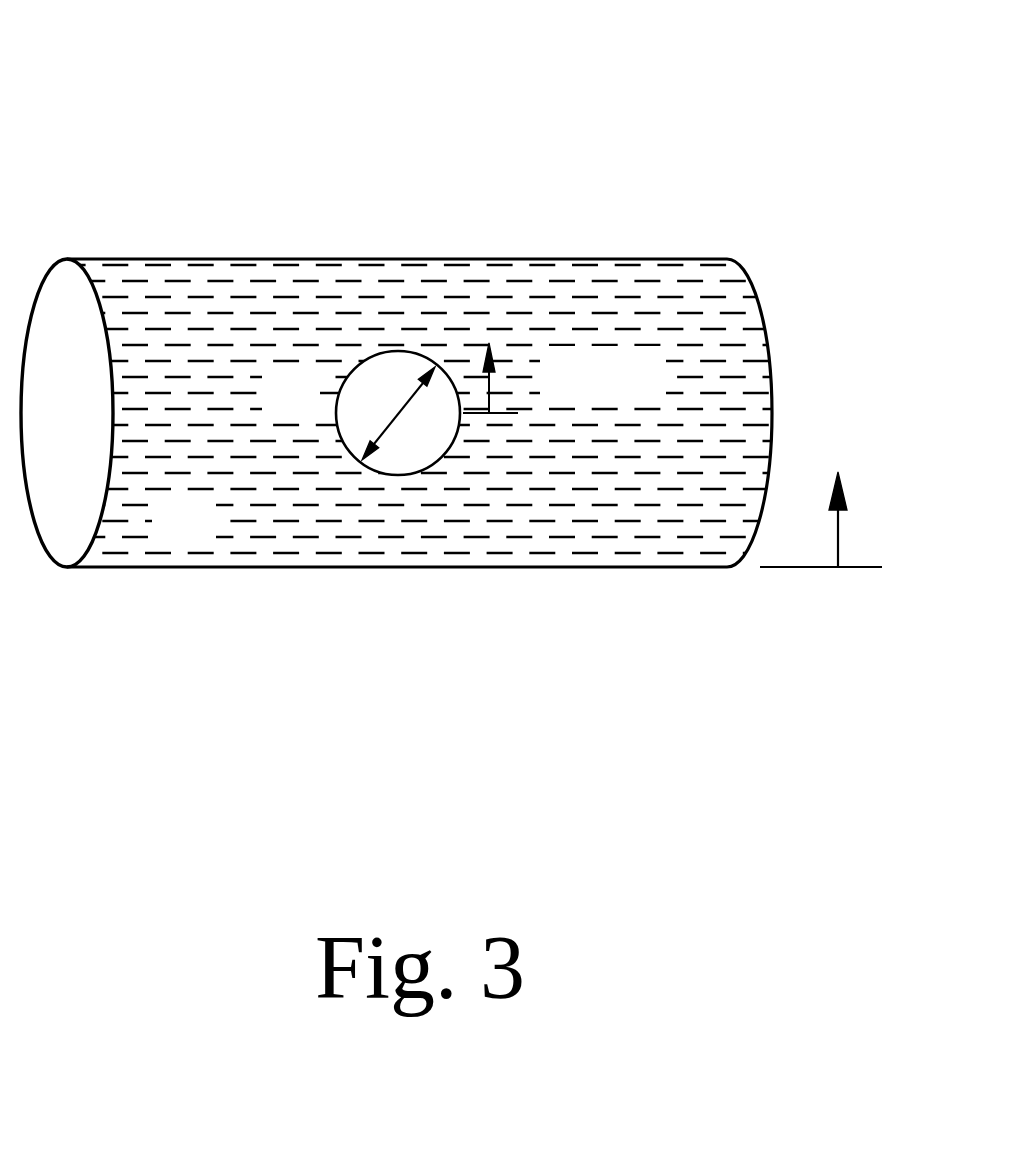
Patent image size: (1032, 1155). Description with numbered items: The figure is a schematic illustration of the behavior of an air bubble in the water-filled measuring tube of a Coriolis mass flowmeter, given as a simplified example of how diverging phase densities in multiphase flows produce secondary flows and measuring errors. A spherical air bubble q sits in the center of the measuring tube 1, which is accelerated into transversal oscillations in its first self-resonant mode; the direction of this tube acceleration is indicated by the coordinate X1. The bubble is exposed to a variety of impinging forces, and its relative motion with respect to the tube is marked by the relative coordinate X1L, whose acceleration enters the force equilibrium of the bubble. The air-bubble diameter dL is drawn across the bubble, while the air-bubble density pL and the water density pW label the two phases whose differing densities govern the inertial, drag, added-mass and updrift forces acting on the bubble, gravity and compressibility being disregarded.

The measuring tube 1 is at (708, 257).
The air bubble q is at (362, 360).
The air-bubble diameter dL is at (403, 413).
The air-bubble density pL is at (291, 382).
The water density pW is at (184, 518).
The relative acceleration of the air bubble X1L is at (562, 378).
The acceleration of the measuring tube X1 is at (841, 519).